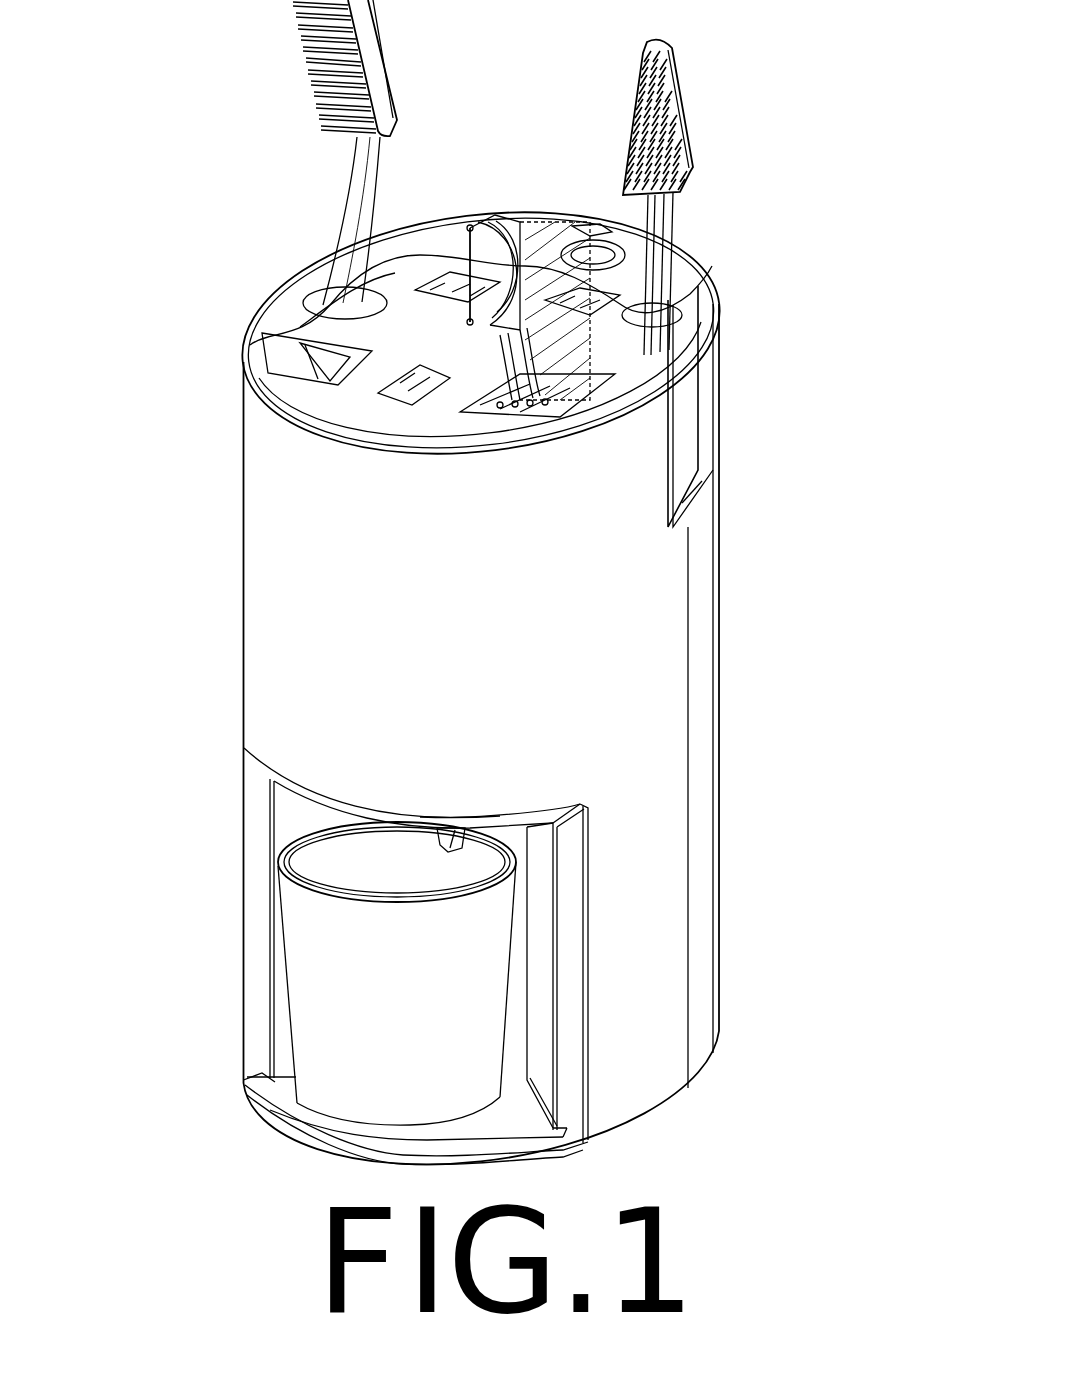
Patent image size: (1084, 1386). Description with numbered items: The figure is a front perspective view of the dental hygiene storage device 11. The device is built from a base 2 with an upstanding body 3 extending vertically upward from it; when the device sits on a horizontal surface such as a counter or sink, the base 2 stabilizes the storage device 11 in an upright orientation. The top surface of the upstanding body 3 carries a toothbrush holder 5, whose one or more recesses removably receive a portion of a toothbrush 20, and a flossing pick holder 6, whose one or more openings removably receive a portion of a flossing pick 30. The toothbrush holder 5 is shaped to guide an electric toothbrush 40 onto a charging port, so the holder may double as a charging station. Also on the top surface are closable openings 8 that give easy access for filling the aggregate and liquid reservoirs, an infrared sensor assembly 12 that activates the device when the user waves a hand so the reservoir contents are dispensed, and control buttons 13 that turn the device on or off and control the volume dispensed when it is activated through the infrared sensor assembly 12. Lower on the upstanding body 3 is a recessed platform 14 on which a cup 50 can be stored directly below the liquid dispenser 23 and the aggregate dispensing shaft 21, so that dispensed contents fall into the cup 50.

The base 2 is at (709, 1027).
The upstanding body 3 is at (283, 703).
The toothbrush holder 5 is at (687, 435).
The flossing pick holder 6 is at (493, 410).
The closable openings 8 is at (262, 340).
The dental hygiene storage device 11 is at (777, 668).
The infrared sensor assembly 12 is at (412, 403).
The control buttons 13 is at (325, 300).
The recessed platform 14 is at (287, 1093).
The toothbrush 20 is at (670, 255).
The aggregate dispensing shaft 21 is at (432, 826).
The liquid dispenser 23 is at (457, 838).
The flossing pick 30 is at (355, 262).
The electric toothbrush 40 is at (338, 302).
The cup 50 is at (306, 988).